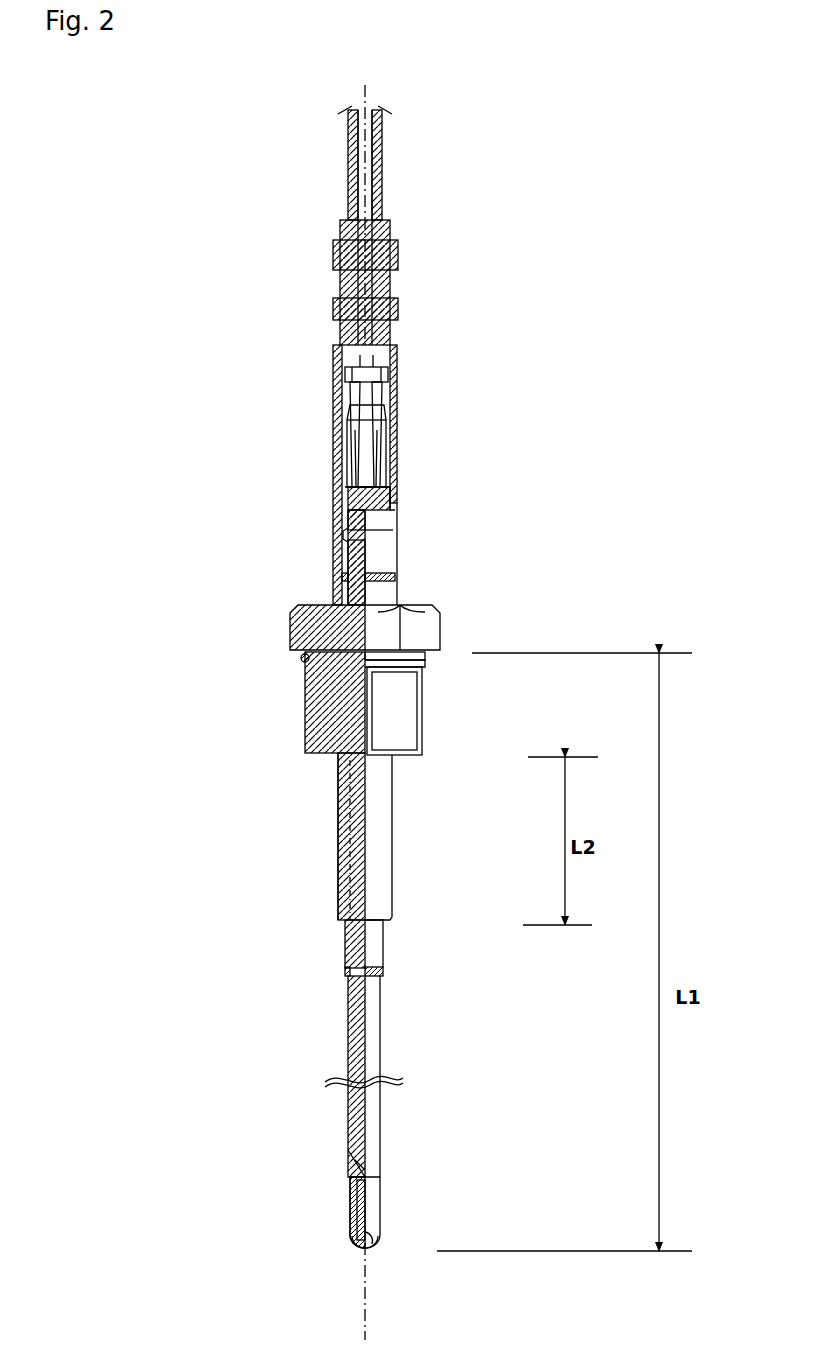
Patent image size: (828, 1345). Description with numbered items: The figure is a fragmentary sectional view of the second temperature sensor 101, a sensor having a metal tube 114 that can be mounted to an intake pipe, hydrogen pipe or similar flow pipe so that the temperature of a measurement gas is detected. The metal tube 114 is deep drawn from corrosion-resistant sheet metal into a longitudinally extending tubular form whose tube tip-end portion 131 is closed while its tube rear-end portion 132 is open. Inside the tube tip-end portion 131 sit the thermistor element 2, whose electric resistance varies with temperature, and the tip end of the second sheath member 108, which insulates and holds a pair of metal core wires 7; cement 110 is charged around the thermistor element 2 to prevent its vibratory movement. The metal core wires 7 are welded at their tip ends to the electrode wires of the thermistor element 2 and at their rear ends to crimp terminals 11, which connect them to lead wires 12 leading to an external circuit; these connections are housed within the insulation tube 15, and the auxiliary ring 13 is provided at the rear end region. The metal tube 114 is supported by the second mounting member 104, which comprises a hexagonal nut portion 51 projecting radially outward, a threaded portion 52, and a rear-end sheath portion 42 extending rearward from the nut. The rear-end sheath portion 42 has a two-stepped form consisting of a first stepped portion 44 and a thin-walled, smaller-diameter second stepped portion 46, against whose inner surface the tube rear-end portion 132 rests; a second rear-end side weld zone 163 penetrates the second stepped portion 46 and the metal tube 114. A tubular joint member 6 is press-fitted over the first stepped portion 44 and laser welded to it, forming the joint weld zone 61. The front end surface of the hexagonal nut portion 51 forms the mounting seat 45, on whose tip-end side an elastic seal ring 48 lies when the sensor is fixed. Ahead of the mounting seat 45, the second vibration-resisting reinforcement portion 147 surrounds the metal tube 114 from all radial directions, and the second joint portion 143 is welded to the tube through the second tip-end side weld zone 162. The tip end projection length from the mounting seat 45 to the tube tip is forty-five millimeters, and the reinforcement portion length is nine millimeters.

The second temperature sensor 101 is at (148, 267).
The lead wires 12 is at (345, 165).
The auxiliary ring 13 is at (397, 240).
The joint member 6 is at (336, 428).
The crimp terminals 11 is at (342, 385).
The insulation tube 15 is at (385, 450).
The metal core wires 7 is at (350, 468).
The tube rear-end portion 132 is at (345, 505).
The rear-end sheath portion 42 is at (203, 505).
The second stepped portion 46 is at (352, 522).
The first stepped portion 44 is at (348, 560).
The second rear-end side weld zone 163 is at (360, 532).
The joint weld zone 61 is at (340, 578).
The hexagonal nut portion 51 is at (290, 625).
The mounting seat 45 is at (303, 660).
The seal ring 48 is at (307, 668).
The threaded portion 52 is at (308, 725).
The second mounting member 104 is at (422, 802).
The second vibration-resisting reinforcement portion 147 is at (338, 855).
The second joint portion 143 is at (345, 945).
The second tip-end side weld zone 162 is at (346, 972).
The second sheath member 108 is at (348, 1030).
The metal tube 114 is at (347, 1148).
The cement 110 is at (350, 1212).
The tube tip-end portion 131 is at (378, 1243).
The thermistor element 2 is at (355, 1248).